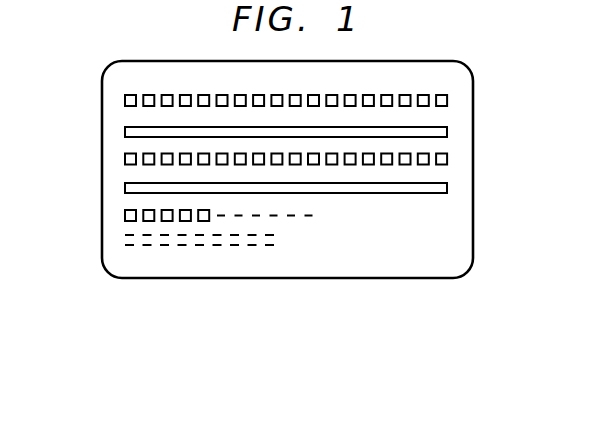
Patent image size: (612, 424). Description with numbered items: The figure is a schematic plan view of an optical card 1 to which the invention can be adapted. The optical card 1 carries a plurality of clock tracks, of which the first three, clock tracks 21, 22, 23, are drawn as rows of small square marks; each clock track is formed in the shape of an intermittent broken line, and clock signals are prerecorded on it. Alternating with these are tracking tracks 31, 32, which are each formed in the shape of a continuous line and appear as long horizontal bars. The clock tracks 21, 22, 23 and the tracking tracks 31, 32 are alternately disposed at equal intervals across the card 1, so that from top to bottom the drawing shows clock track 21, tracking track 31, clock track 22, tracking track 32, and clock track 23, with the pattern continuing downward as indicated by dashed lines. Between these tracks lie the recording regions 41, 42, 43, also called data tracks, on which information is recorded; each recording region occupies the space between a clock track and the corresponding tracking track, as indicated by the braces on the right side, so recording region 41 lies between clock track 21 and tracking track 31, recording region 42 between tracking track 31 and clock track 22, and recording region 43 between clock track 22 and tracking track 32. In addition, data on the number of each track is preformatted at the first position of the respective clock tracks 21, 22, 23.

The optical card 1 is at (435, 270).
The clock track 21 is at (119, 95).
The clock track 22 is at (119, 153).
The clock track 23 is at (119, 210).
The tracking track 31 is at (119, 127).
The tracking track 32 is at (119, 183).
The recording region 41 is at (452, 105).
The recording region 42 is at (452, 137).
The recording region 43 is at (452, 165).